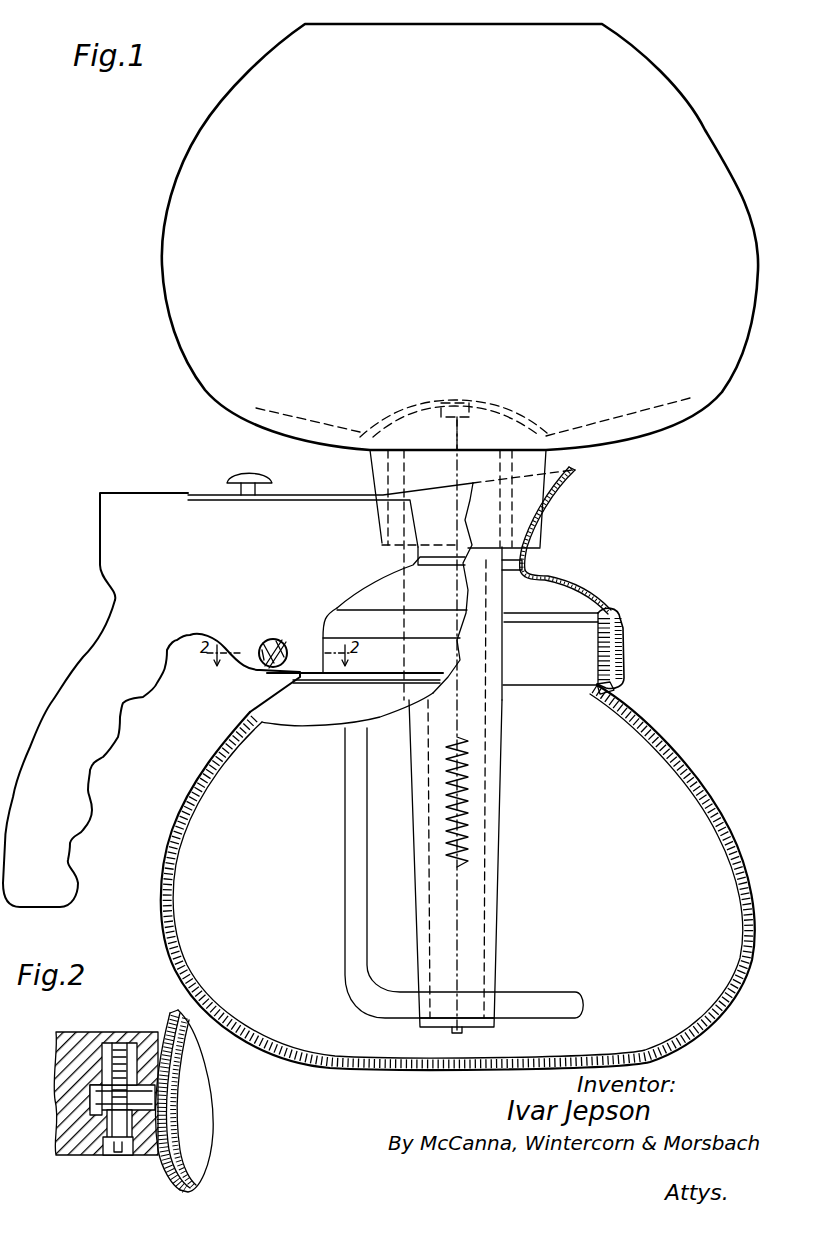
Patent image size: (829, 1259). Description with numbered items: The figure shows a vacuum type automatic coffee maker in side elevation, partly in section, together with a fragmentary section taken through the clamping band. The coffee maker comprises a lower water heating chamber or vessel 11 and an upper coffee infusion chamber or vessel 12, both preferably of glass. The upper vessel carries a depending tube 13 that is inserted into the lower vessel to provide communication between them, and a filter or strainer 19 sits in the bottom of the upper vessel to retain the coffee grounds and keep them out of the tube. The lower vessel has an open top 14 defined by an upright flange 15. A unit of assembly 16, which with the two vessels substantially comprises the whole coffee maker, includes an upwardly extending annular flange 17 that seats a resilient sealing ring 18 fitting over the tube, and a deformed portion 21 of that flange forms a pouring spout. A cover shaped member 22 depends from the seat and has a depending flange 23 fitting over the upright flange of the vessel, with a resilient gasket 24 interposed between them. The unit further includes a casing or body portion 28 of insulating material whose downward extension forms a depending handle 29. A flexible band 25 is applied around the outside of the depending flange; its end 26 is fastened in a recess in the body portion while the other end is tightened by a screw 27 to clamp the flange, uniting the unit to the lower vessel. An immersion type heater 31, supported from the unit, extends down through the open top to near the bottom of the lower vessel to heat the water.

In FIG. 1, the lower water heating chamber or vessel 11 is at (660, 722).
In FIG. 2, the lower water heating chamber or vessel 11 is at (183, 1136).
In FIG. 1, the upper coffee infusion chamber or vessel 12 is at (678, 386).
In FIG. 1, the depending tube 13 is at (501, 832).
In FIG. 1, the open top 14 is at (432, 616).
In FIG. 1, the upright flange 15 is at (600, 650).
In FIG. 1, the unit of assembly 16 is at (150, 490).
In FIG. 1, the annular flange 17 is at (538, 546).
In FIG. 1, the resilient sealing ring 18 is at (471, 575).
In FIG. 1, the filter or strainer 19 is at (490, 412).
In FIG. 1, the deformed portion 21 is at (552, 506).
In FIG. 1, the cover shaped member 22 is at (583, 597).
In FIG. 1, the depending flange 23 is at (628, 666).
In FIG. 2, the depending flange 23 is at (196, 1181).
In FIG. 1, the resilient gasket 24 is at (604, 690).
In FIG. 2, the resilient gasket 24 is at (194, 1150).
In FIG. 1, the flexible band 25 is at (626, 642).
In FIG. 2, the flexible band 25 is at (165, 1165).
In FIG. 2, the end of the band 26 is at (62, 1100).
In FIG. 1, the screw 27 is at (270, 639).
In FIG. 2, the screw 27 is at (125, 1158).
In FIG. 1, the casing or body portion 28 is at (298, 530).
In FIG. 2, the casing or body portion 28 is at (58, 1148).
In FIG. 1, the depending handle 29 is at (72, 690).
In FIG. 1, the immersion type heater 31 is at (366, 990).